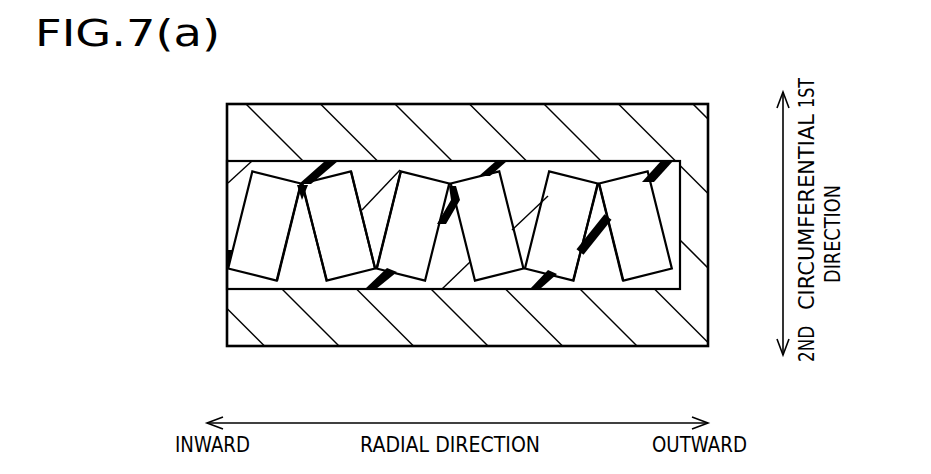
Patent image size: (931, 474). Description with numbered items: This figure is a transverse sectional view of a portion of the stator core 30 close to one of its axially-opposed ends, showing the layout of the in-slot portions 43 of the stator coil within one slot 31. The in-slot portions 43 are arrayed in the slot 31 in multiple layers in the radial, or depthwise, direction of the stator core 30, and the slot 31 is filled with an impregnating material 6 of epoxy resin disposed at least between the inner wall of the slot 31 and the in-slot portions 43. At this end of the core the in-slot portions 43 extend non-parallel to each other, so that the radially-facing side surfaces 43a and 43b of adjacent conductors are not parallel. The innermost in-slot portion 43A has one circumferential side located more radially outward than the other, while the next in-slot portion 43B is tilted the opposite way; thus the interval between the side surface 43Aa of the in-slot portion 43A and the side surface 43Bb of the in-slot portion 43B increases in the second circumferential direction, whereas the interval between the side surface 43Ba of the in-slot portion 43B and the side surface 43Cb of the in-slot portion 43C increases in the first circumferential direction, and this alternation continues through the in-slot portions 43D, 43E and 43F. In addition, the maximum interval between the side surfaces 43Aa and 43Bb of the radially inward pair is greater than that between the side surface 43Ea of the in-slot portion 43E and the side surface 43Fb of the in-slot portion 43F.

The stator core 30 is at (590, 128).
The slot 31 is at (453, 175).
The impregnating material 6 is at (445, 255).
The in-slot portion 43 is at (424, 289).
The in-slot portion 43A is at (265, 220).
The in-slot portion 43B is at (348, 253).
The in-slot portion 43C is at (407, 262).
The in-slot portion 43D is at (502, 262).
The in-slot portion 43E is at (561, 225).
The in-slot portion 43F is at (648, 242).
The side surface 43a is at (358, 228).
The side surface 43b is at (484, 228).
The side surface 43Aa is at (287, 246).
The side surface 43Ba is at (372, 183).
The side surface 43Bb is at (325, 254).
The side surface 43Cb is at (387, 185).
The side surface 43Ea is at (583, 265).
The side surface 43Fb is at (612, 263).